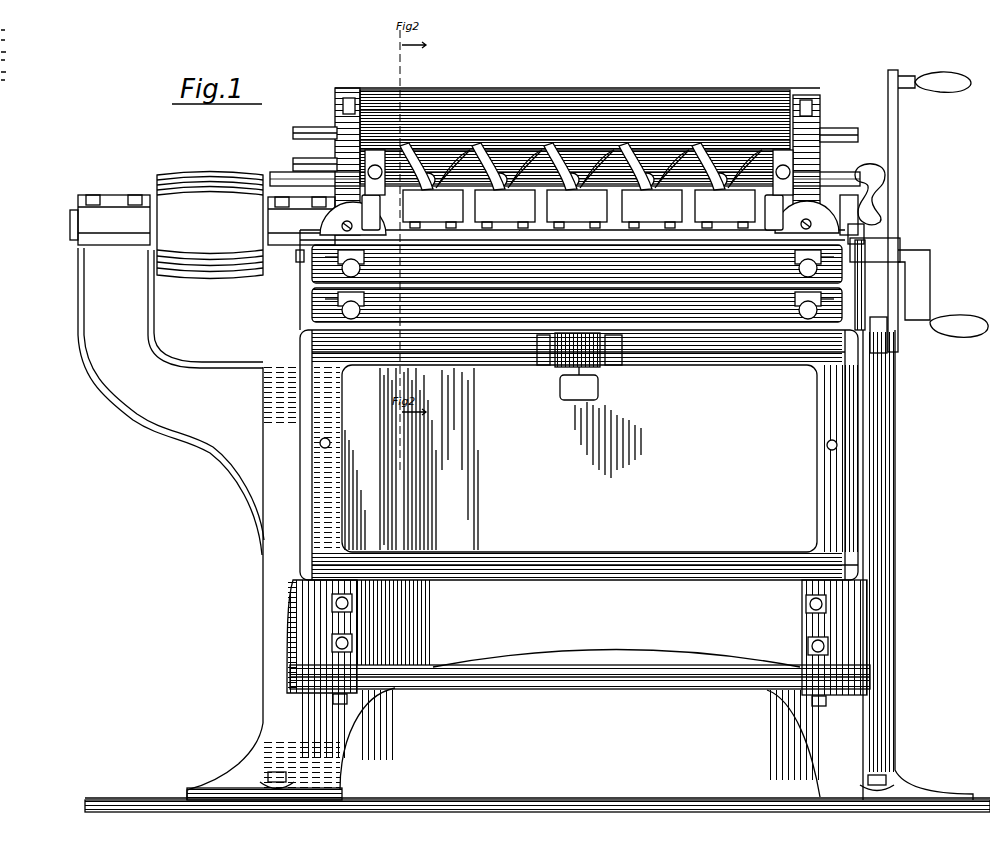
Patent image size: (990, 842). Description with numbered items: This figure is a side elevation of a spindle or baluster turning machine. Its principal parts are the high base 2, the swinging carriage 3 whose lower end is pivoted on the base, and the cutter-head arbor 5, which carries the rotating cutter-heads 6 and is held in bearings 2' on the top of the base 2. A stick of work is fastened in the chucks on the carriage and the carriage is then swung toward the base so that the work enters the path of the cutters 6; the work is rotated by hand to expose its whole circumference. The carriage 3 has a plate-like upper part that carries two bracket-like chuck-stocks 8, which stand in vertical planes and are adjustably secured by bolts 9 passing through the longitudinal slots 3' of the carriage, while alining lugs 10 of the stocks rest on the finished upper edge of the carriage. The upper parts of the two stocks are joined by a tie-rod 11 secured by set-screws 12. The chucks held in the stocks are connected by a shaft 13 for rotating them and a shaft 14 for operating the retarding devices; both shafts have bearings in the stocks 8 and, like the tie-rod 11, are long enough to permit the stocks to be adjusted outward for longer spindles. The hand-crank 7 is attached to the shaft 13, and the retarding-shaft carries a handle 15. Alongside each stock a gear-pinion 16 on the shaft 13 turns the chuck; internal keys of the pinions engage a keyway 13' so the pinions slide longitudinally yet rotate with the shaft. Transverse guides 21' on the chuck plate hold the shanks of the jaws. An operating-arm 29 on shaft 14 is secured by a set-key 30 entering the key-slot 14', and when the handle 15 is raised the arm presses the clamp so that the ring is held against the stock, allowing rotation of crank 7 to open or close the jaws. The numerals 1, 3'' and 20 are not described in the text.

The crank shaft 1 is at (898, 166).
The high base 2 is at (537, 572).
The bearings 2' is at (525, 520).
The swinging carriage 3 is at (579, 405).
The longitudinal slots 3' is at (820, 458).
The cross bar 3'' is at (577, 264).
The cutter-head arbor 5 is at (70, 226).
The cutter-heads 6 is at (581, 185).
The hand-crank 7 is at (940, 284).
The chuck-stocks 8 is at (838, 116).
The bolts 9 is at (362, 262).
The alining lugs 10 is at (318, 200).
The tie-rod 11 is at (650, 140).
The set-screws 12 is at (348, 96).
The shaft 13 is at (584, 258).
The keyway 13' is at (905, 335).
The shaft 14 is at (311, 153).
The key-slot 14' is at (292, 161).
The handle 15 is at (886, 190).
The gear-pinion 16 is at (338, 296).
The rod 20 is at (294, 132).
The transverse guides or housings 21' is at (579, 152).
The operating-arm 29 is at (372, 150).
The set-key 30 is at (382, 168).